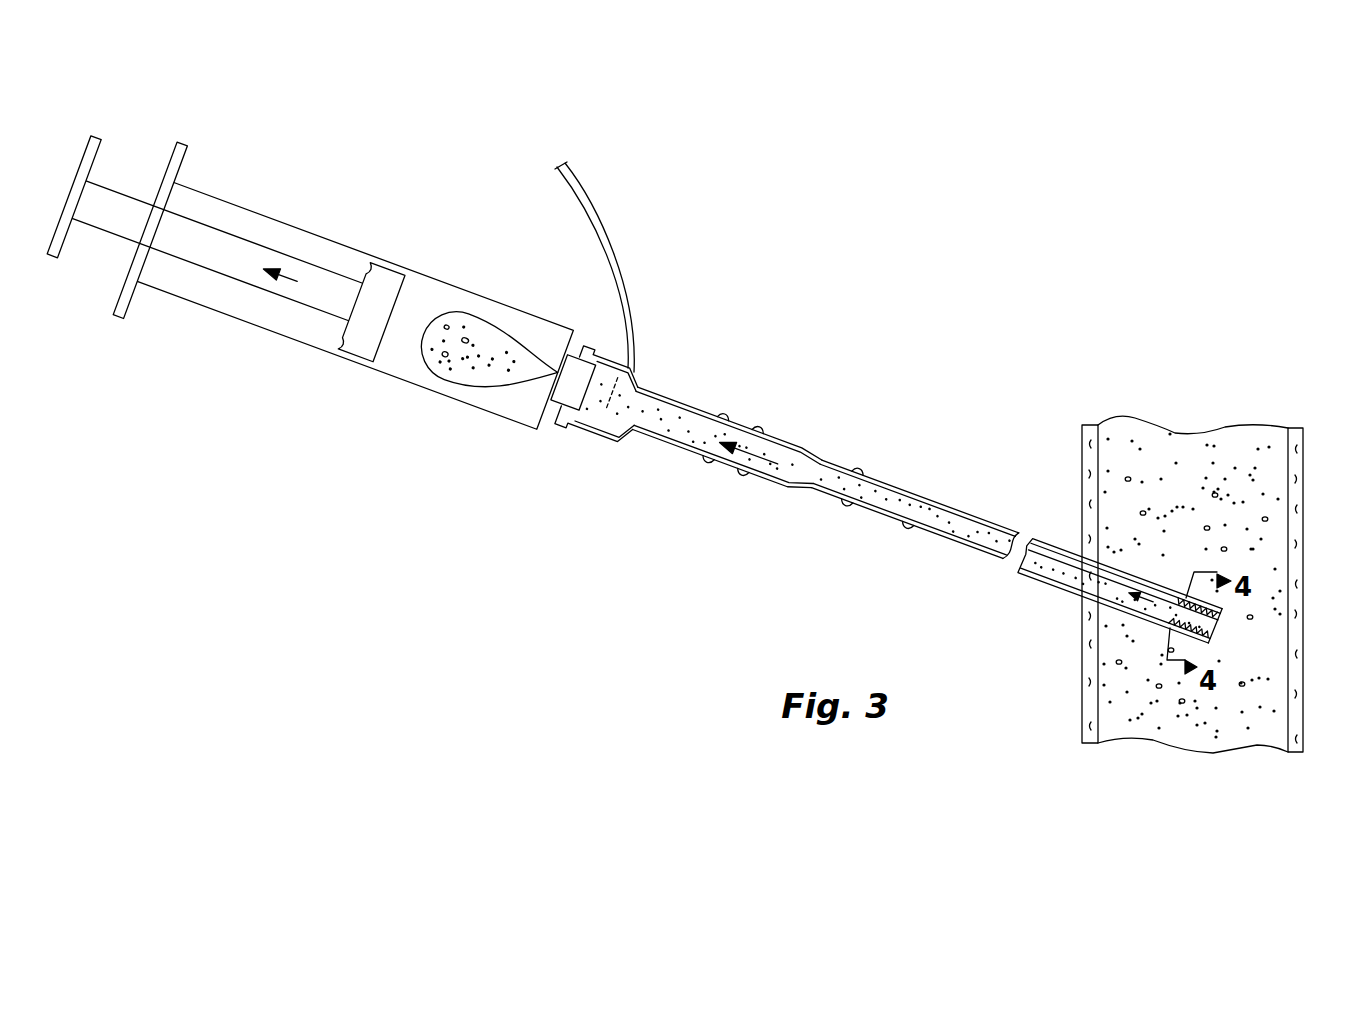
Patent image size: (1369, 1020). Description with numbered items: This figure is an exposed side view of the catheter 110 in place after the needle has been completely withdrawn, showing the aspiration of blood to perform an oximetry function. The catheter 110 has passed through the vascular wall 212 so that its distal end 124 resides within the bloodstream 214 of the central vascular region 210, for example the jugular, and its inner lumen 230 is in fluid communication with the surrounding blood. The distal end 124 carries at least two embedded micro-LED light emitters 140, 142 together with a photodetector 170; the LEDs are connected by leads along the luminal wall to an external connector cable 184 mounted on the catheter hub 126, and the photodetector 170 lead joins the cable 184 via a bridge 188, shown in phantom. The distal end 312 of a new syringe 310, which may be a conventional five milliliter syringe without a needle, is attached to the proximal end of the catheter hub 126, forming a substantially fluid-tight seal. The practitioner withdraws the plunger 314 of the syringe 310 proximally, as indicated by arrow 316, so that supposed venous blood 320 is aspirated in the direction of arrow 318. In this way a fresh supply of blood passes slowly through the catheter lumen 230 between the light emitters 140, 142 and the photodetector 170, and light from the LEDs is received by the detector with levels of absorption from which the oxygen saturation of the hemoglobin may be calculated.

The syringe 310 is at (351, 231).
The arrow 316 is at (303, 267).
The plunger 314 is at (326, 349).
The venous blood 320 is at (442, 292).
The distal end 312 is at (575, 355).
The bridge 188 is at (635, 393).
The external connector cable 184 is at (620, 238).
The catheter hub 126 is at (693, 380).
The arrow 318 is at (755, 452).
The catheter 110 is at (920, 497).
The light emitter 140 is at (1205, 590).
The light emitter 142 is at (1220, 603).
The distal end 124 is at (1213, 625).
The inner lumen 230 is at (1213, 625).
The photodetector 170 is at (1210, 643).
The vascular wall 212 is at (1082, 462).
The central vascular region 210 is at (1314, 440).
The bloodstream 214 is at (1225, 425).